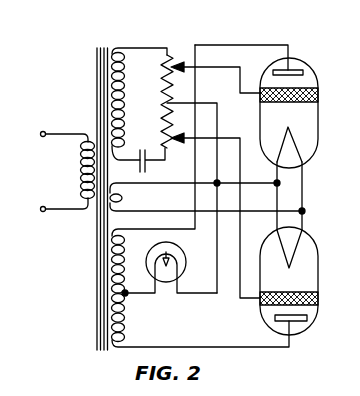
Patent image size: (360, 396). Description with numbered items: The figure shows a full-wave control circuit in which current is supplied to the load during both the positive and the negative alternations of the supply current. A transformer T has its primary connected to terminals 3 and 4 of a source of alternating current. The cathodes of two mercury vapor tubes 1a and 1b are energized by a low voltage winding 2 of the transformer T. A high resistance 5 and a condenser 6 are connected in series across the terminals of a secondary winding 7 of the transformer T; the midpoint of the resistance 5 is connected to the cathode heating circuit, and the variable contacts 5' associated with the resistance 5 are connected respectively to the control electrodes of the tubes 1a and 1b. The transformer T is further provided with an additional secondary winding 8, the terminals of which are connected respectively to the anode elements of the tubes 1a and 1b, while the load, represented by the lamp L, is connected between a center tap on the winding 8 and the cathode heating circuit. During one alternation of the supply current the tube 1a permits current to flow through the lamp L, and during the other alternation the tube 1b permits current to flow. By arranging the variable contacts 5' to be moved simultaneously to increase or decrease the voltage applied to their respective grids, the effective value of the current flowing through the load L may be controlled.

The transformer T is at (95, 50).
The terminal 3 is at (56, 134).
The terminal 4 is at (56, 207).
The secondary winding 7 is at (126, 88).
The high resistance 5 is at (156, 101).
The variable contact 5' is at (215, 172).
The condenser 6 is at (141, 149).
The low voltage winding 2 is at (125, 198).
The lamp L is at (180, 254).
The additional secondary winding 8 is at (129, 314).
The tube 1a is at (318, 115).
The tube 1b is at (318, 262).